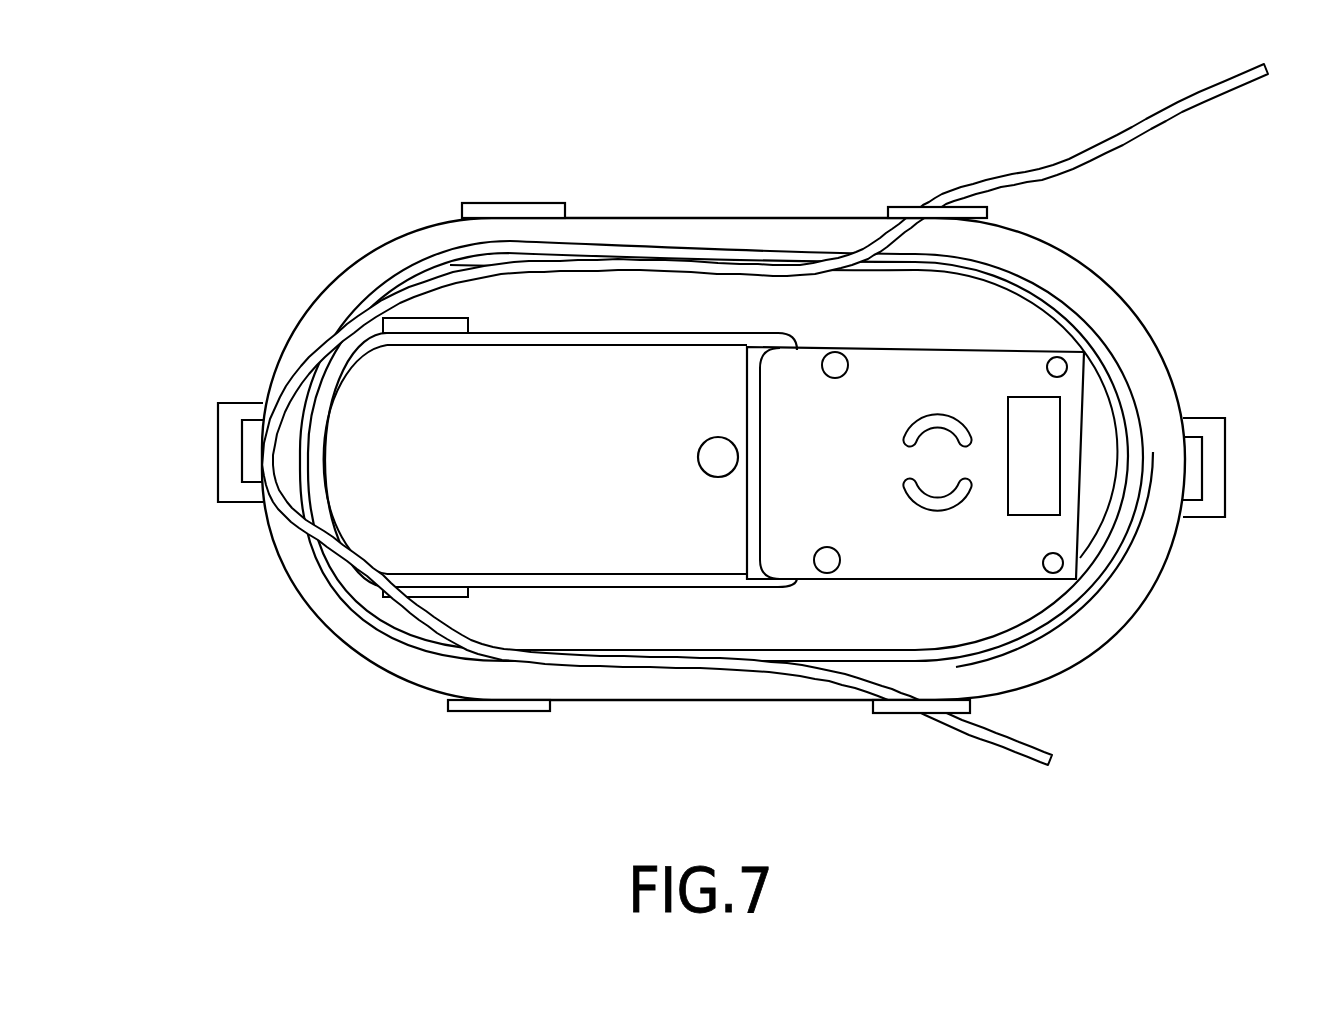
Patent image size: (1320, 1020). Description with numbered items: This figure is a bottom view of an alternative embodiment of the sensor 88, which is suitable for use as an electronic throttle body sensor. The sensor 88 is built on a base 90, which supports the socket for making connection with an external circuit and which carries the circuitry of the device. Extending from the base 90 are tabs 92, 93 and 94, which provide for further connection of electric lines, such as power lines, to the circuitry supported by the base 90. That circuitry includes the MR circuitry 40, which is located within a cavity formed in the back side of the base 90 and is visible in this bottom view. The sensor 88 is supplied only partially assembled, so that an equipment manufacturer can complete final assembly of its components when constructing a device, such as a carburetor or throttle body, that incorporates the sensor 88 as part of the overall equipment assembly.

The MR circuitry 40 is at (1080, 415).
The sensor 88 is at (372, 678).
The base 90 is at (721, 702).
The tab 92 is at (903, 207).
The tab 93 is at (218, 437).
The tab 94 is at (511, 210).